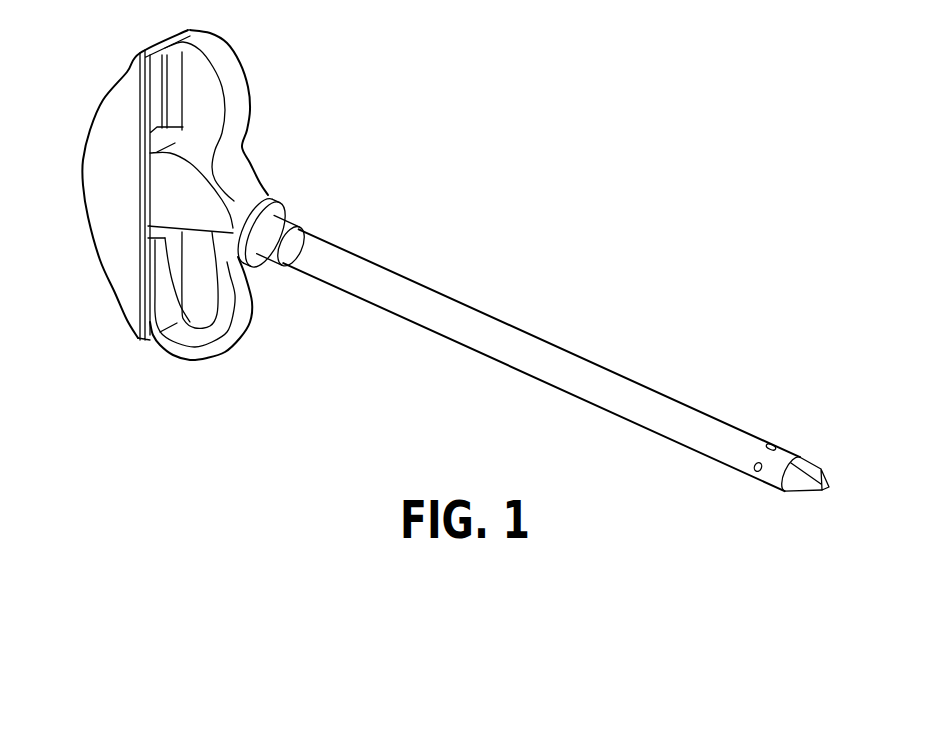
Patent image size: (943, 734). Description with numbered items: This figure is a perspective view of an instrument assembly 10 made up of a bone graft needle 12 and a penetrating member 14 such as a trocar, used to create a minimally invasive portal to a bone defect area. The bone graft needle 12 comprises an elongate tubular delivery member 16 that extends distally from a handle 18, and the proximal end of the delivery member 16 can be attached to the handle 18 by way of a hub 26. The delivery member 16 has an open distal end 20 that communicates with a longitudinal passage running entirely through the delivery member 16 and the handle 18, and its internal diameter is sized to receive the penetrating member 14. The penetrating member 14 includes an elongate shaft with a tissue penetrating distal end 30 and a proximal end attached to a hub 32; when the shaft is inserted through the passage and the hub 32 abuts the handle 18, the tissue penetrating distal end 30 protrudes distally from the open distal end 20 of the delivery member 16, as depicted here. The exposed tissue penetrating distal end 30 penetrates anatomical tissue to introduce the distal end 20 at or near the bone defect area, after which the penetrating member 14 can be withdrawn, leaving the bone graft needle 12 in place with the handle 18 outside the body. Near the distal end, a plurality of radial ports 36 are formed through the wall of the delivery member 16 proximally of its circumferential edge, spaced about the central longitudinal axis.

The instrument assembly 10 is at (522, 211).
The bone graft needle 12 is at (536, 335).
The penetrating member 14 is at (116, 312).
The elongate tubular delivery member 16 is at (430, 335).
The handle 18 is at (257, 67).
The open distal end 20 is at (804, 455).
The hub 26 is at (290, 201).
The tissue penetrating distal end 30 is at (803, 493).
The hub 32 is at (97, 96).
The radial ports 36 is at (772, 445).